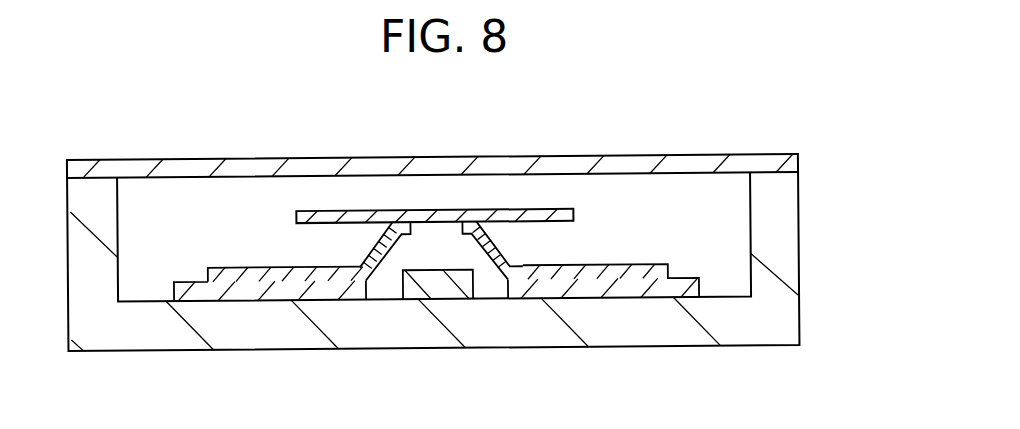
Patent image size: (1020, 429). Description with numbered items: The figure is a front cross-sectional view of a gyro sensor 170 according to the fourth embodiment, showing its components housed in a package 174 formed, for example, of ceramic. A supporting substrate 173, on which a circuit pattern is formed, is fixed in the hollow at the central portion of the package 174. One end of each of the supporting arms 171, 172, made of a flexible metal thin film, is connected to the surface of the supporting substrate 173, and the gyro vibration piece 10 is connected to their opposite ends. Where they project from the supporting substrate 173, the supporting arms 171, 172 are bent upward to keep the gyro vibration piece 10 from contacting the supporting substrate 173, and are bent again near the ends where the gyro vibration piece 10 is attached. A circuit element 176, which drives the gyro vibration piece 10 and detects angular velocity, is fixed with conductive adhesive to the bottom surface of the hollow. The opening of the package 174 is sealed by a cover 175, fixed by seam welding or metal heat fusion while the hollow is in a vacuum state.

The gyro vibration piece 10 is at (478, 209).
The gyro sensor 170 is at (808, 130).
The supporting arm 171 is at (366, 258).
The supporting arm 172 is at (503, 257).
The supporting substrate 173 is at (246, 296).
The package 174 is at (760, 318).
The cover 175 is at (748, 155).
The circuit element 176 is at (440, 290).